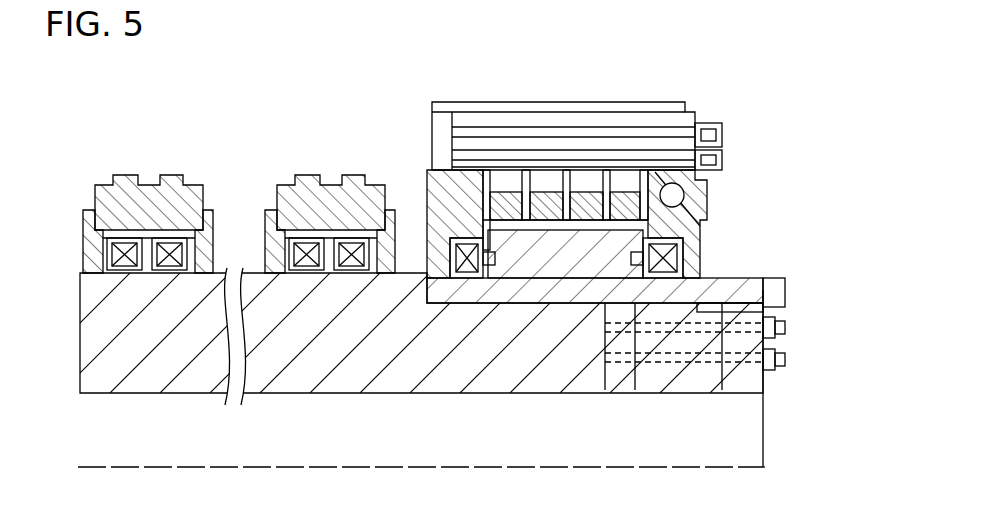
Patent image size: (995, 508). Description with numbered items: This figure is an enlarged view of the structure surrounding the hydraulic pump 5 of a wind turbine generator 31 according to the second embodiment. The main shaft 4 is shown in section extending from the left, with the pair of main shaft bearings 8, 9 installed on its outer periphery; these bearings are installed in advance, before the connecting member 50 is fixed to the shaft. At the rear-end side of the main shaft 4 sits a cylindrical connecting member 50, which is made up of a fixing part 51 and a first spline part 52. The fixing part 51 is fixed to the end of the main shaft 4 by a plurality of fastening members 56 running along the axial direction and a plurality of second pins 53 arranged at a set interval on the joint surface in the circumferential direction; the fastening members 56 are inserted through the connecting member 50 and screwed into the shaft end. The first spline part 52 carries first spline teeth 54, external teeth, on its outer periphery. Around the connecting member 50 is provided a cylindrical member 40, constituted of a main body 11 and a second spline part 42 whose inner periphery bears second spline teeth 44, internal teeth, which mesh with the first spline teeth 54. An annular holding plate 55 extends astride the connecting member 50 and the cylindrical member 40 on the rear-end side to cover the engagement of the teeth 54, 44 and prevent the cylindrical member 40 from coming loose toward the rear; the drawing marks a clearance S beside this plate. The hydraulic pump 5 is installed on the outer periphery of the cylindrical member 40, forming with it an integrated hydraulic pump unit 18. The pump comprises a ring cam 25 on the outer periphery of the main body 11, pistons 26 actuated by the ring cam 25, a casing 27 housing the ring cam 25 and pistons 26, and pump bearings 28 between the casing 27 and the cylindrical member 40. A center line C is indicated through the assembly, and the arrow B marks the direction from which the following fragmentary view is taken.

The main shaft 4 is at (430, 357).
The hydraulic pump 5 is at (548, 115).
The main shaft bearing 8 is at (147, 185).
The main shaft bearing 9 is at (328, 185).
The main body 11 is at (549, 284).
The hydraulic pump unit 18 is at (413, 160).
The ring cam 25 is at (700, 228).
The piston 26 is at (632, 190).
The casing 27 is at (703, 184).
The pump bearing 28 is at (428, 221).
The wind turbine generator 31 is at (363, 120).
The cylindrical member 40 is at (793, 233).
The second spline part 42 is at (743, 293).
The second spline teeth 44 is at (757, 290).
The connecting member 50 is at (667, 403).
The fixing part 51 is at (652, 390).
The first spline part 52 is at (740, 345).
The second pin 53 is at (605, 320).
The first spline teeth 54 is at (725, 355).
The holding plate 55 is at (787, 283).
The fastening member 56 is at (612, 362).
The gap S is at (786, 307).
The arrow B is at (804, 343).
The center line C is at (621, 290).